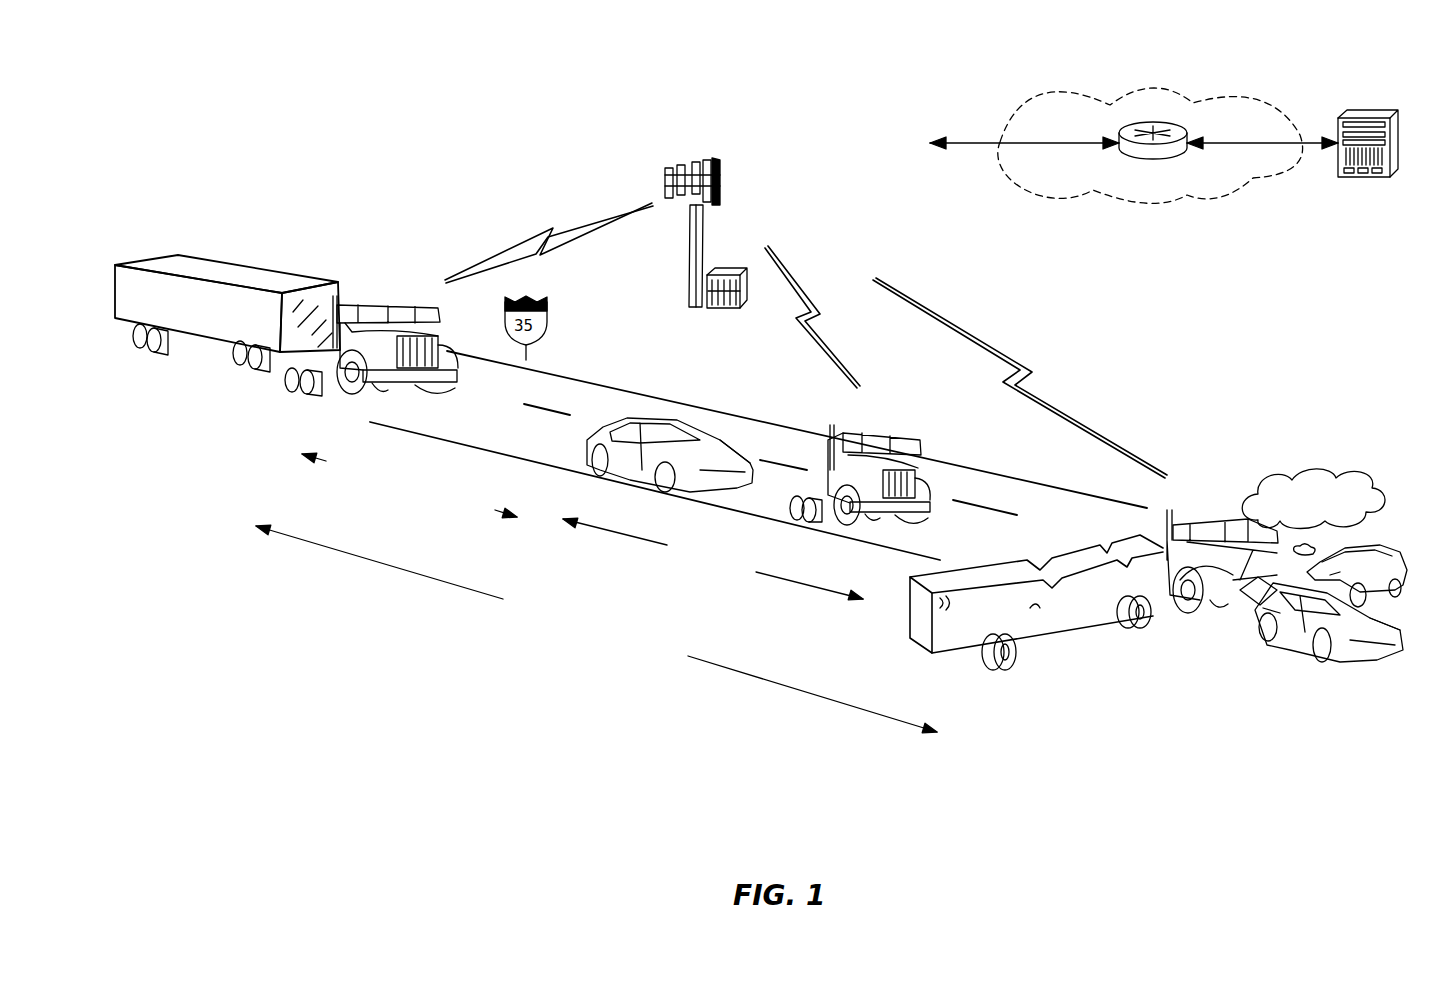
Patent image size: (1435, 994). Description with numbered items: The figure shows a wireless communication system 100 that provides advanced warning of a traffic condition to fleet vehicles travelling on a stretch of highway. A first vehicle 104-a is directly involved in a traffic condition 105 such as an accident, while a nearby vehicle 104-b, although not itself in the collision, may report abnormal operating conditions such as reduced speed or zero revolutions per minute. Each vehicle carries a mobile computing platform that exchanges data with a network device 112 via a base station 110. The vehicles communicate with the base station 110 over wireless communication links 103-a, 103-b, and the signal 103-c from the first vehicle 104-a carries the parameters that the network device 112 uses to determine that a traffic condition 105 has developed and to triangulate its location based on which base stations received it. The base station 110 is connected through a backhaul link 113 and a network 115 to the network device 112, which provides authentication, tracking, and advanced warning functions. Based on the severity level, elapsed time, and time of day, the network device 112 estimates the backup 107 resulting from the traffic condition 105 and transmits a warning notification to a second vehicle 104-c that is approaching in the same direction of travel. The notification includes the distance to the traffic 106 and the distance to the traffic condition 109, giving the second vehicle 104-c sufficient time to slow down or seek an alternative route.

The wireless communication system 100 is at (244, 85).
The wireless communication link 103-a is at (514, 248).
The wireless communication link 103-b is at (825, 315).
The signal 103-c is at (1035, 378).
The first vehicle 104-a is at (1190, 620).
The vehicle 104-b is at (842, 532).
The second vehicle 104-c is at (380, 298).
The traffic condition 105 is at (1324, 565).
The distance to the traffic 106 is at (422, 516).
The estimated backup 107 is at (721, 602).
The distance to the traffic condition 109 is at (607, 657).
The base station 110 is at (688, 305).
The network device 112 is at (1370, 180).
The backhaul link 113 is at (968, 146).
The network 115 is at (1248, 192).